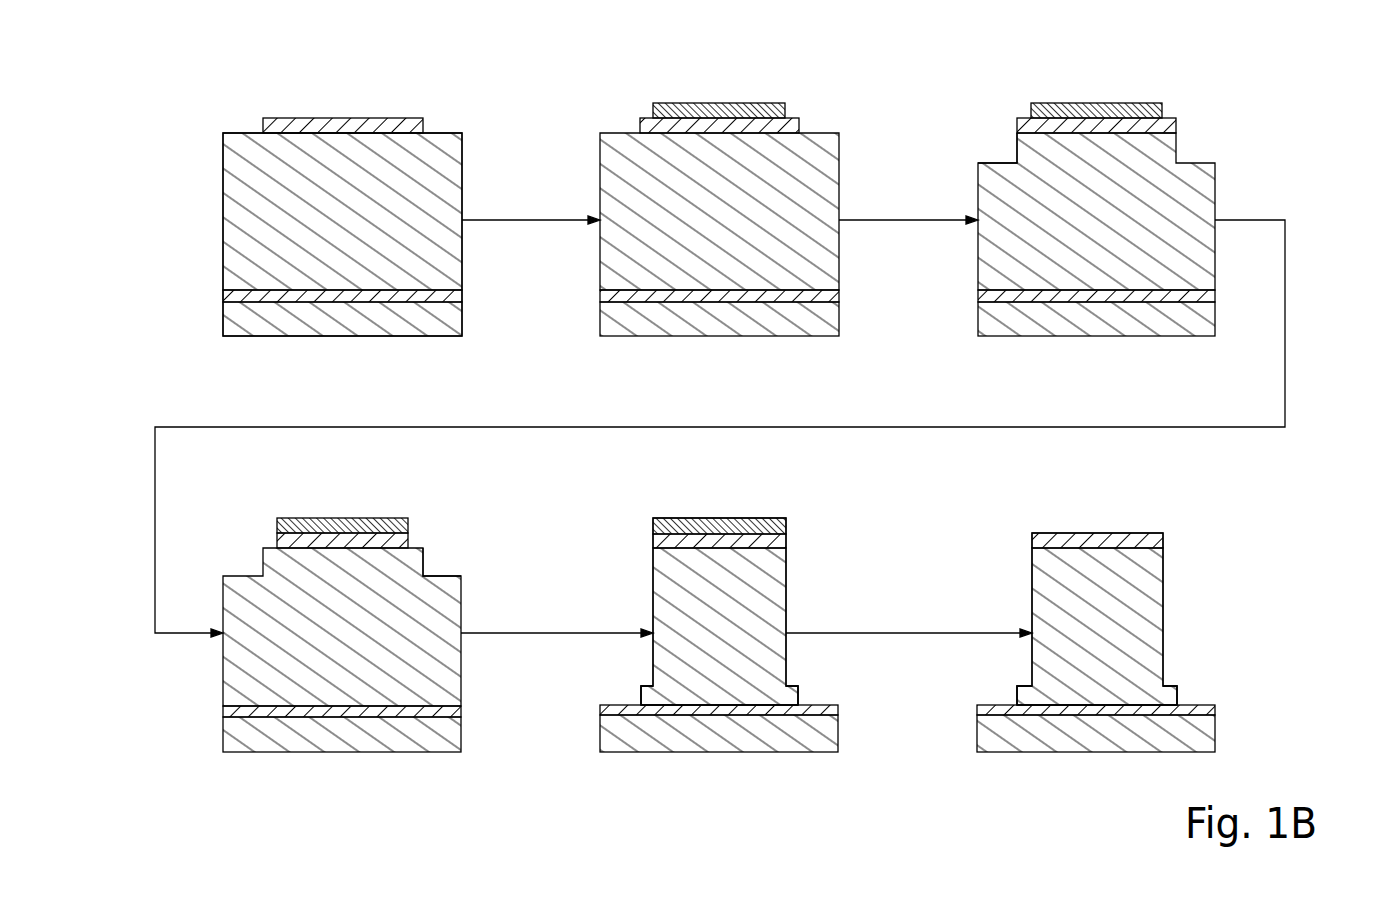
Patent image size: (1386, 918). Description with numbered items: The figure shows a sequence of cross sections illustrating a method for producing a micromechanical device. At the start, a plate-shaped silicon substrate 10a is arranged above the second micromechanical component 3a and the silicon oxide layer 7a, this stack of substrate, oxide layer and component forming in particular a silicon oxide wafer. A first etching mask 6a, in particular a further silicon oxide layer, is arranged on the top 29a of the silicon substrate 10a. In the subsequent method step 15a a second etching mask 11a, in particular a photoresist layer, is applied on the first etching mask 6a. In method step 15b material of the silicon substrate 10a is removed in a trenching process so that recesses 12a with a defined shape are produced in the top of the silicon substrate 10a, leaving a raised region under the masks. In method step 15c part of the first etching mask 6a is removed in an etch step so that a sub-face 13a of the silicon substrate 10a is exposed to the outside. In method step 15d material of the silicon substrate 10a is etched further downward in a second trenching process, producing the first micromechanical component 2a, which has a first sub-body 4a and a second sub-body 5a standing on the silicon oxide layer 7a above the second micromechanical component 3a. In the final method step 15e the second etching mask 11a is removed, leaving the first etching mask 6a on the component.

The first micromechanical component 2a is at (799, 590).
The second micromechanical component 3a is at (240, 321).
The first sub-body 4a is at (672, 660).
The second sub-body 5a is at (790, 697).
The first etching mask 6a is at (342, 128).
The silicon oxide layer 7a is at (240, 296).
The silicon substrate 10a is at (240, 268).
The second etching mask 11a is at (748, 112).
The recesses 12a is at (989, 150).
The sub-face 13a is at (420, 537).
The method step 15a is at (528, 220).
The method step 15b is at (905, 220).
The method step 15c is at (181, 633).
The method step 15d is at (555, 633).
The method step 15e is at (906, 633).
The top of the silicon substrate 29a is at (240, 121).